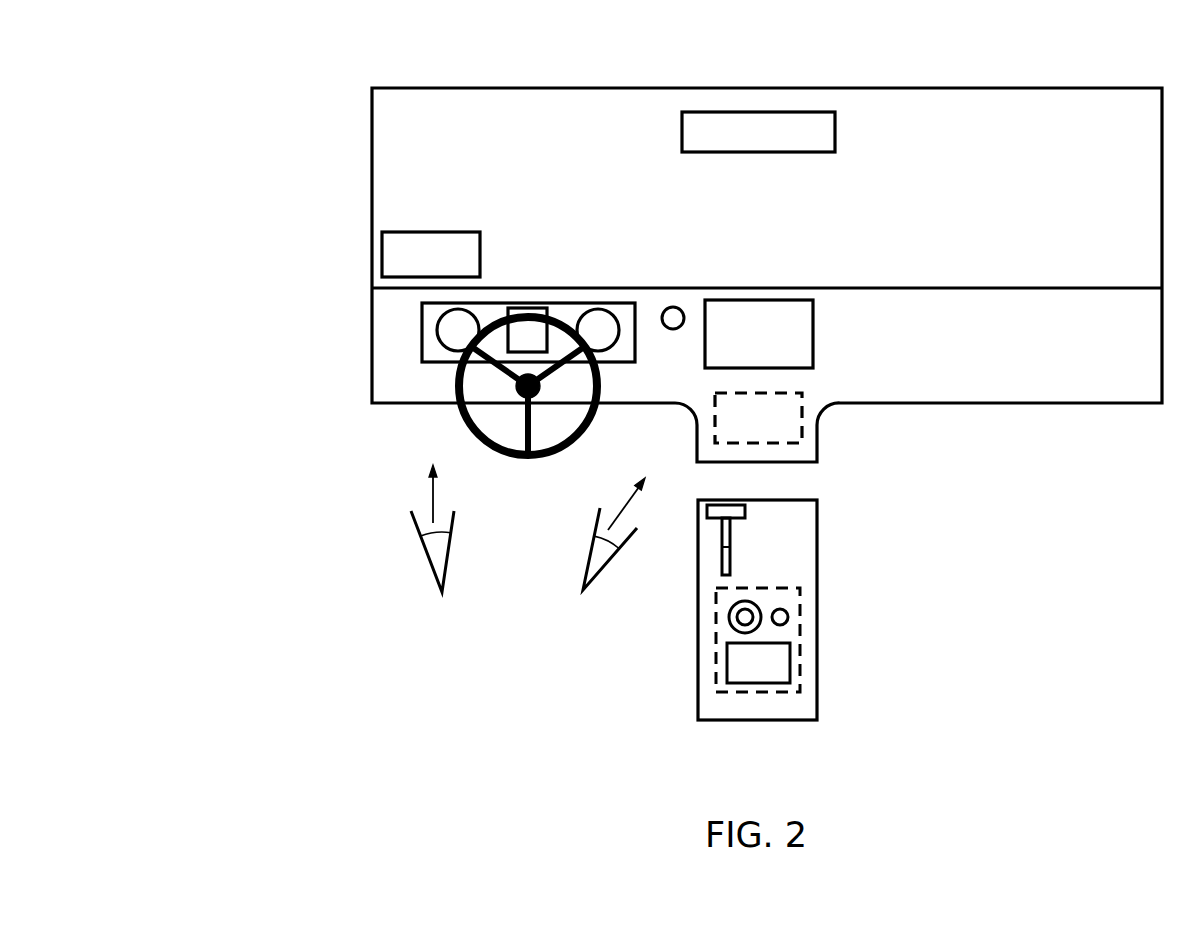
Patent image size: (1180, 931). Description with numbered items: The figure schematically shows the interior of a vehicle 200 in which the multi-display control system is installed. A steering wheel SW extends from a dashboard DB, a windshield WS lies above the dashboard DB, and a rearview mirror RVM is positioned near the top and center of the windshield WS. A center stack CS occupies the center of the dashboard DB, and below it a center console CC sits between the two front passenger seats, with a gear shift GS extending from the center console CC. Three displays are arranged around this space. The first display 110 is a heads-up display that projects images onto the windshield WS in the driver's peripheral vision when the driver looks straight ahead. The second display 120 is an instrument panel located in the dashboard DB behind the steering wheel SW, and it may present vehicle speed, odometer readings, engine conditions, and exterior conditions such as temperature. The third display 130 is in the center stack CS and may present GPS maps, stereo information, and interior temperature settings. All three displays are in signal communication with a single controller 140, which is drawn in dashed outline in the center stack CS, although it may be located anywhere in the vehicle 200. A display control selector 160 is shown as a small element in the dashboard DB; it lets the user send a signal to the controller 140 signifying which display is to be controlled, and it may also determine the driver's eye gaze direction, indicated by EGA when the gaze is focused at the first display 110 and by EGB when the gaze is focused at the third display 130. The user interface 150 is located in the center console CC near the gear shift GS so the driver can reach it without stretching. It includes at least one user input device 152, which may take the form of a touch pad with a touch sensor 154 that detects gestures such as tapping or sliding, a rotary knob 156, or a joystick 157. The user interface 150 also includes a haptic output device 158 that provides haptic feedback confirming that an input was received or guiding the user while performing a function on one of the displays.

The vehicle 200 is at (296, 167).
The first display 110 is at (453, 265).
The second display 120 is at (422, 318).
The third display 130 is at (782, 350).
The controller 140 is at (782, 433).
The user interface 150 is at (752, 634).
The user input device 152 is at (786, 599).
The touch sensor 154 is at (780, 663).
The rotary knob 156 is at (788, 623).
The joystick 157 is at (728, 622).
The haptic output device 158 is at (717, 663).
The display control selector 160 is at (673, 306).
The windshield WS is at (448, 127).
The rearview mirror RVM is at (790, 144).
The dashboard DB is at (428, 395).
The center stack CS is at (816, 273).
The steering wheel SW is at (575, 452).
The center console CC is at (806, 533).
The gear shift GS is at (718, 527).
The eye gaze direction toward first display EGA is at (428, 567).
The eye gaze direction toward third display EGB is at (588, 558).